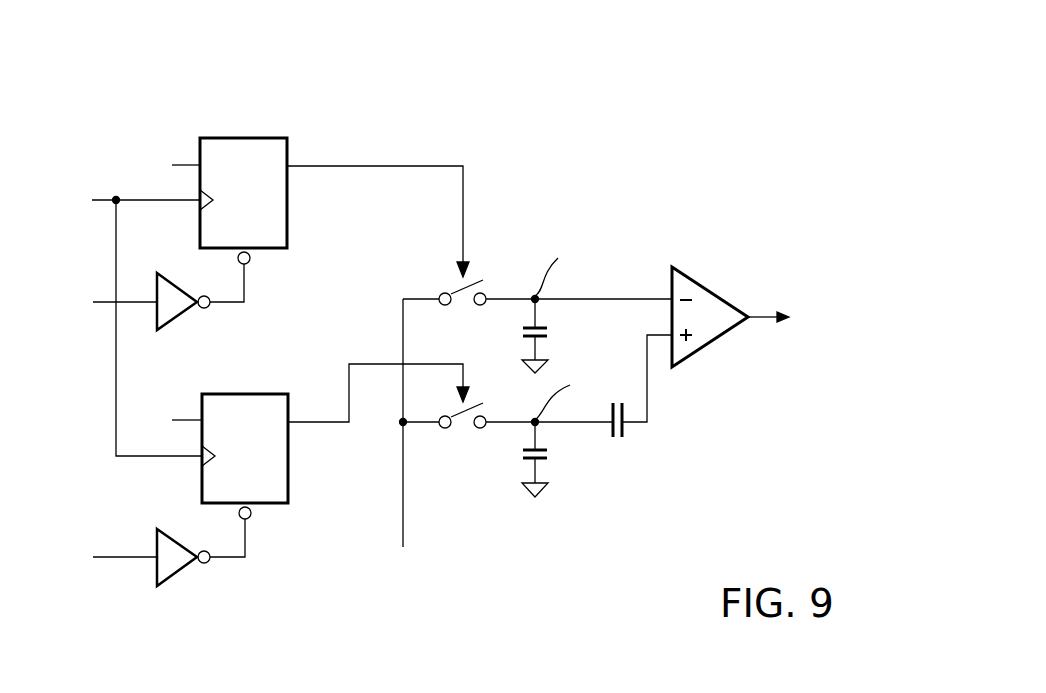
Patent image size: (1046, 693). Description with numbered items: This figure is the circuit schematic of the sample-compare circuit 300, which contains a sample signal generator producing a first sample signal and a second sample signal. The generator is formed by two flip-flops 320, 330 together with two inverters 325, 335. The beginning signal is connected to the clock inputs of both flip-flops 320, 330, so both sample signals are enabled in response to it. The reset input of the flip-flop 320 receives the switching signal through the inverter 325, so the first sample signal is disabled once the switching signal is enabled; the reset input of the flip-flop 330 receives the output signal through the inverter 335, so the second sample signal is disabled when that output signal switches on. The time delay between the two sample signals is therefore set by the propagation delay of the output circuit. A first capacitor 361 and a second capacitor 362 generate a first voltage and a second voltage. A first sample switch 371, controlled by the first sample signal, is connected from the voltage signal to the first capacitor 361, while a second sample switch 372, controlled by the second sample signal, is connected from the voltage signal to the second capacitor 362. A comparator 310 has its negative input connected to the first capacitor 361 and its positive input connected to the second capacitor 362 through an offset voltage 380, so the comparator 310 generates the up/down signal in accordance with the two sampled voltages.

The sample-compare circuit 300 is at (857, 135).
The comparator 310 is at (706, 290).
The flip-flop 320 is at (287, 228).
The inverter 325 is at (177, 315).
The flip-flop 330 is at (288, 490).
The inverter 335 is at (177, 570).
The first capacitor 361 is at (550, 333).
The second capacitor 362 is at (550, 456).
The first sample switch 371 is at (469, 309).
The second sample switch 372 is at (469, 431).
The offset voltage 380 is at (627, 432).